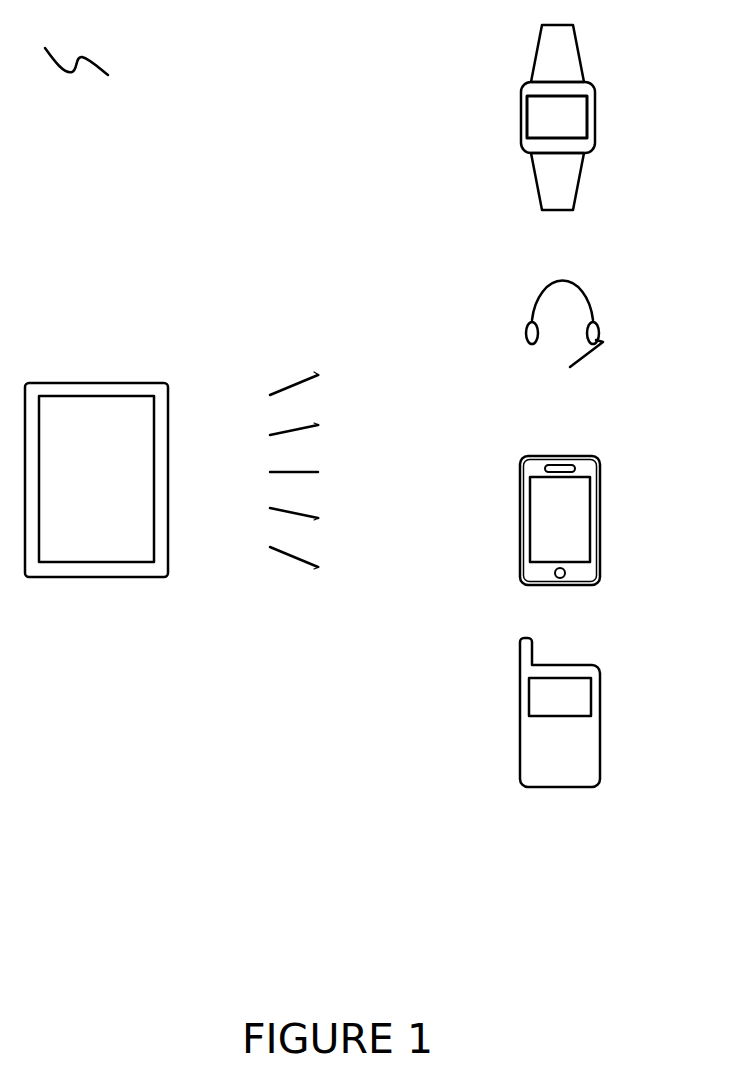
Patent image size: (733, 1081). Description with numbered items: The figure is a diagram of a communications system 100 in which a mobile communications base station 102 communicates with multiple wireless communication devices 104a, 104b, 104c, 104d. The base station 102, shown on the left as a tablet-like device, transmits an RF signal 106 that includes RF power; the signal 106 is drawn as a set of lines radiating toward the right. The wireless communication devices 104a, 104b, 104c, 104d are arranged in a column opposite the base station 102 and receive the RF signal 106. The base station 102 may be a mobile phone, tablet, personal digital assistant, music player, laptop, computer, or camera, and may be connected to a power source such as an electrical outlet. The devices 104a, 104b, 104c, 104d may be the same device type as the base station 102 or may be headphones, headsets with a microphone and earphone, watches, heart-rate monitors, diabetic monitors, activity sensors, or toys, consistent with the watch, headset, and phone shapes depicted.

The communications system 100 is at (66, 47).
The mobile communications base station 102 is at (78, 383).
The wireless communication device 104a is at (585, 80).
The wireless communication device 104b is at (566, 272).
The wireless communication device 104c is at (557, 456).
The wireless communication device 104d is at (557, 665).
The RF signal 106 is at (293, 386).